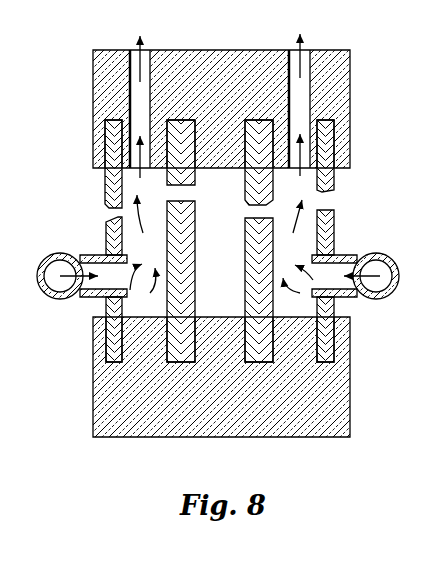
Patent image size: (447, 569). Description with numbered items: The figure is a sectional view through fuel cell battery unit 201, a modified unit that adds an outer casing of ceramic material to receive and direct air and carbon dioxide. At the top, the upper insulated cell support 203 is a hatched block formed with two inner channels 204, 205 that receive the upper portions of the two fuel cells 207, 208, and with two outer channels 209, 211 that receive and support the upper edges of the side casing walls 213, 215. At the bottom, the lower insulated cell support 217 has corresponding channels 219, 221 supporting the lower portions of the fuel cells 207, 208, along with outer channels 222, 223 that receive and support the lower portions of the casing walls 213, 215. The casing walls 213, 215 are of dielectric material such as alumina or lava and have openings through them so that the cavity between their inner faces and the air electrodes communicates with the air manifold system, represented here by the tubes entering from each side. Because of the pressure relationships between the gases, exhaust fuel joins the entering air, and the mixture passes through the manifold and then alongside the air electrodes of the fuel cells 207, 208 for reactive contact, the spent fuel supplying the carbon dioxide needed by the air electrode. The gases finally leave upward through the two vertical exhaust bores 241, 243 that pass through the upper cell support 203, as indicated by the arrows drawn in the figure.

The fuel cell battery unit 201 is at (353, 44).
The upper insulated cell support 203 is at (222, 62).
The channel 204 is at (180, 122).
The channel 205 is at (255, 122).
The fuel cell 207 is at (186, 222).
The fuel cell 208 is at (244, 262).
The outer channel 209 is at (105, 130).
The outer channel 211 is at (328, 122).
The side casing wall 213 is at (87, 219).
The side casing wall 215 is at (334, 222).
The lower insulated cell support 217 is at (224, 420).
The channel 219 is at (170, 320).
The channel 221 is at (228, 326).
The outer channel 222 is at (106, 352).
The outer channel 223 is at (334, 352).
The vertical exhaust bore 241 is at (130, 50).
The vertical exhaust bore 243 is at (308, 80).